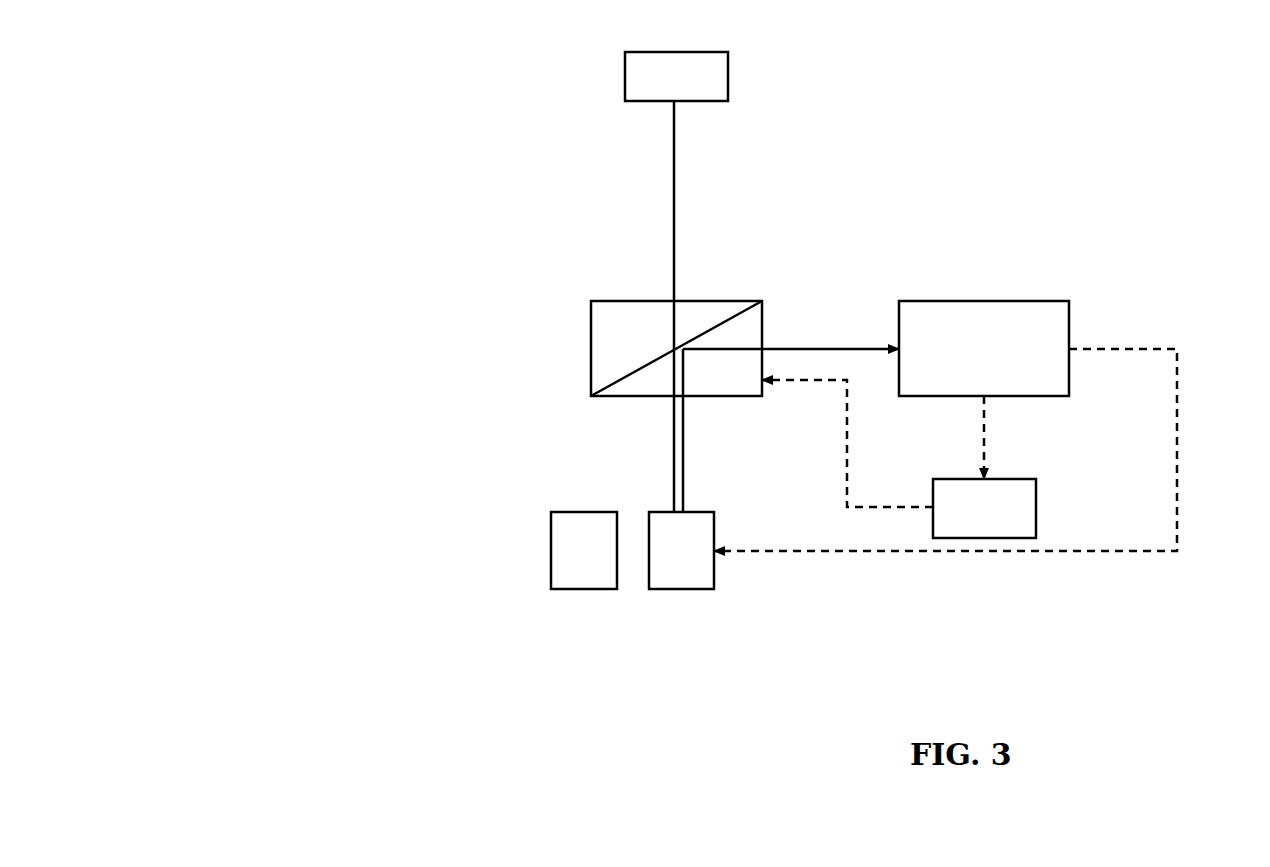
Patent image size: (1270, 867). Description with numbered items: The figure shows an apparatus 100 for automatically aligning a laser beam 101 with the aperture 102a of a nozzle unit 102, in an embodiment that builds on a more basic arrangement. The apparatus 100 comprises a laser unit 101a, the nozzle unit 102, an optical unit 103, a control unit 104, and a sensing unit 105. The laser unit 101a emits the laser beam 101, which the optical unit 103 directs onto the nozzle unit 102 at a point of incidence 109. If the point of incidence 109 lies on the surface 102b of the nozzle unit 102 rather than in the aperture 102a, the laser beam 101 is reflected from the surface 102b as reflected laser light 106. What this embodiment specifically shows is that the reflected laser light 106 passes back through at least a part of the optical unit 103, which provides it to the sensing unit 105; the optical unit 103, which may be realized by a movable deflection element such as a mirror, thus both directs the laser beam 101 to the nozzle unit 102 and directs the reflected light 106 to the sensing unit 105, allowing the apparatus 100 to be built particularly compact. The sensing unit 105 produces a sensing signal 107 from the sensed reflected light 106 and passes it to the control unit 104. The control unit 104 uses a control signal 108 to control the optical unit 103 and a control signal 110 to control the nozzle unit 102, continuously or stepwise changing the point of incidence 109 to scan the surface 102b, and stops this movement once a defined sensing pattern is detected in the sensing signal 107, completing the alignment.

The apparatus 100 is at (330, 587).
The laser beam 101 is at (673, 232).
The laser unit 101a is at (728, 74).
The nozzle unit 102 is at (629, 574).
The aperture 102a is at (633, 582).
The surface 102b is at (565, 512).
The optical unit 103 is at (591, 357).
The control unit 104 is at (1037, 512).
The sensing unit 105 is at (1070, 330).
The reflected laser light 106 is at (683, 432).
The sensing signal 107 is at (985, 447).
The control signal 108 is at (848, 475).
The point of incidence 109 is at (672, 503).
The control signal 110 is at (1177, 513).